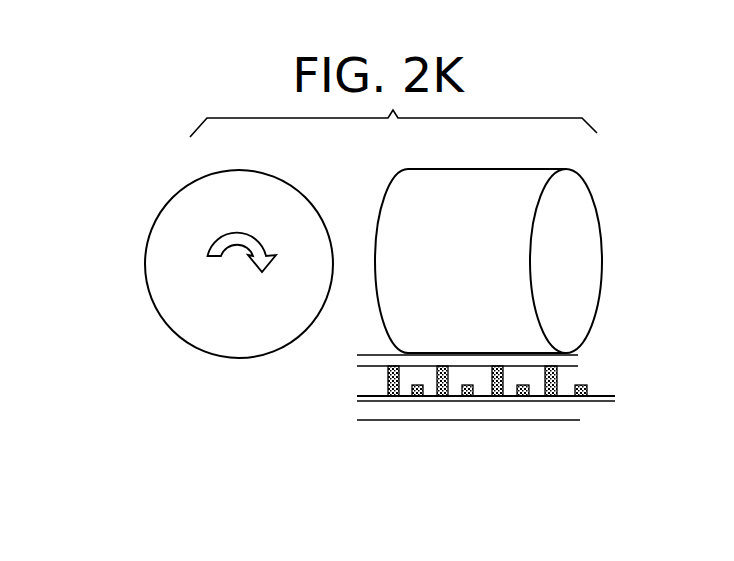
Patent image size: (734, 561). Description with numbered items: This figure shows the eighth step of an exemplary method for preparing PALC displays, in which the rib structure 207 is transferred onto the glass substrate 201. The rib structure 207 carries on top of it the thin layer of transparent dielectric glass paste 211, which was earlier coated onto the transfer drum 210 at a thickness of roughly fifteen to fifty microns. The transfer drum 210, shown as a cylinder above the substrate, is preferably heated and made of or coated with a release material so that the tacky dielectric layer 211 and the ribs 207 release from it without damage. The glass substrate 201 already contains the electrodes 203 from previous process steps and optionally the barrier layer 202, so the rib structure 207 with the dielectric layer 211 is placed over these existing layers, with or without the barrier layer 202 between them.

The glass substrate 201 is at (360, 410).
The barrier layer 202 is at (613, 396).
The electrodes 203 is at (583, 387).
The rib structure 207 is at (388, 382).
The transfer drum 210 is at (578, 193).
The thin layer of transparent dielectric glass paste 211 is at (574, 360).